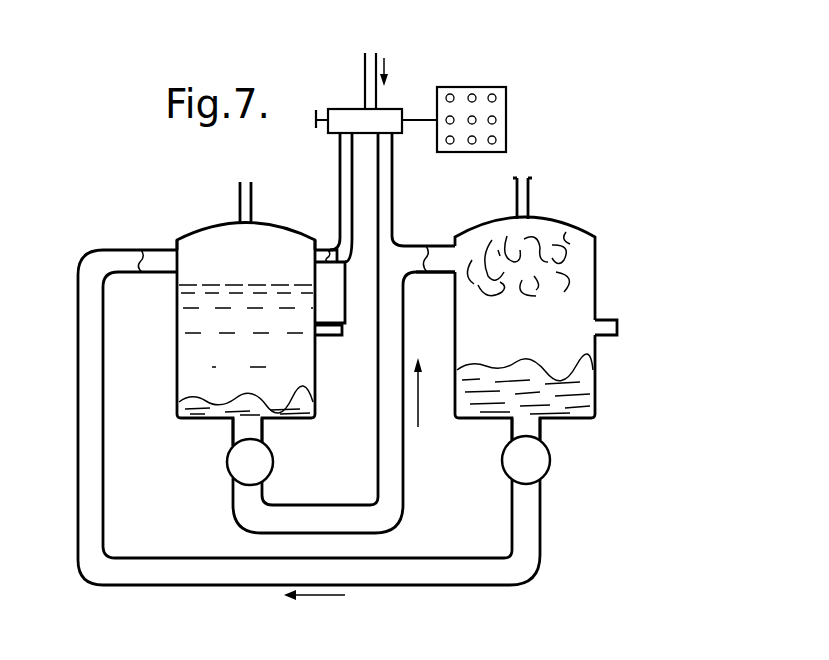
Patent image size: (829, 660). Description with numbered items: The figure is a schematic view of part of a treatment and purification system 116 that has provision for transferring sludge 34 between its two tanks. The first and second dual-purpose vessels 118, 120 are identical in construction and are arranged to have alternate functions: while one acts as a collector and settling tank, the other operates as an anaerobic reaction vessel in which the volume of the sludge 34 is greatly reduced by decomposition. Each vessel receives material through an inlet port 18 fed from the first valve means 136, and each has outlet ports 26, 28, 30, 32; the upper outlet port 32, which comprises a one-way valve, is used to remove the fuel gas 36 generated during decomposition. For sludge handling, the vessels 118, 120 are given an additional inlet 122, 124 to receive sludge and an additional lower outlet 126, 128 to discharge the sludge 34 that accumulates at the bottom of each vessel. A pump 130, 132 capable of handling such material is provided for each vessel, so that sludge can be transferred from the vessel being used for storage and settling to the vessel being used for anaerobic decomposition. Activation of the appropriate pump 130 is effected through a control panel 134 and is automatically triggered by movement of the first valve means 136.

The treatment and purification system 116 is at (586, 528).
The first dual-purpose vessel 118 is at (188, 230).
The second dual-purpose vessel 120 is at (597, 280).
The additional inlet 122 is at (152, 248).
The additional inlet 124 is at (439, 246).
The additional lower outlet 126 is at (264, 430).
The additional lower outlet 128 is at (542, 433).
The pump 130 is at (232, 467).
The pump 132 is at (540, 471).
The control panel 134 is at (498, 130).
The first valve means 136 is at (347, 124).
The inlet port 18 is at (343, 270).
The outlet port 26 is at (328, 337).
The outlet port 28 is at (615, 318).
The outlet port 30 is at (240, 202).
The upper outlet port 32 is at (530, 197).
The sludge 34 is at (193, 412).
The fuel gas 36 is at (573, 248).